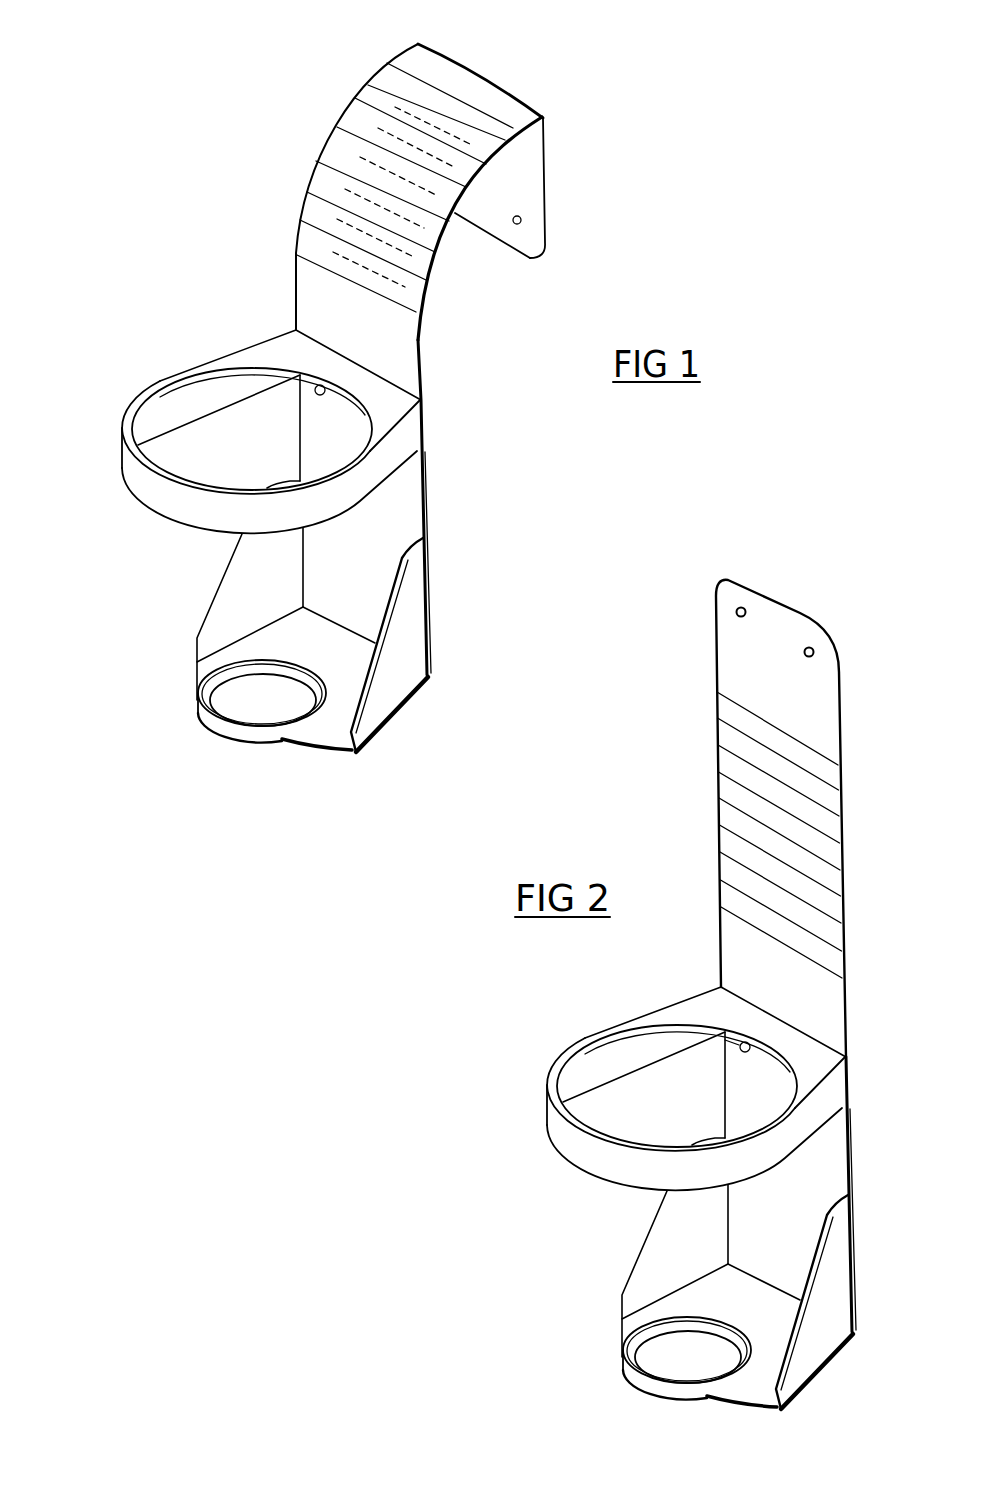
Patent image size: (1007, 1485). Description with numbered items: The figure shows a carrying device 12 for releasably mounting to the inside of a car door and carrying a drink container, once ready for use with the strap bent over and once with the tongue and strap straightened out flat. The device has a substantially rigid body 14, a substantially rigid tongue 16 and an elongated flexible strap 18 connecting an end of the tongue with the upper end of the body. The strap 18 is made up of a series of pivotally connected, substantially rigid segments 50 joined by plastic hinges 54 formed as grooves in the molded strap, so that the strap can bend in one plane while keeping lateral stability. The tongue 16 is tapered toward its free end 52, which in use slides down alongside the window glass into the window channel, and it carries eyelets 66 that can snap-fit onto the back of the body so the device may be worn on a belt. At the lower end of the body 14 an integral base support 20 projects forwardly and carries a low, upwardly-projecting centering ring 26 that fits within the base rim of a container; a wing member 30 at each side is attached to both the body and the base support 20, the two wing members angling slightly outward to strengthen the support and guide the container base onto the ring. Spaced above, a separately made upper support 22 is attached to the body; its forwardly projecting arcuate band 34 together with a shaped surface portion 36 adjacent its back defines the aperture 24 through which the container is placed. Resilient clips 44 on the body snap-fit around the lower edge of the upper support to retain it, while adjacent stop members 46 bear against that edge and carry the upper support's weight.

The carrying device 12 is at (200, 205).
The body 14 is at (425, 518).
The tongue 16 is at (548, 157).
The strap 18 is at (332, 137).
The base support 20 is at (195, 680).
The upper support 22 is at (168, 367).
The aperture 24 is at (222, 447).
The ring 26 is at (222, 727).
The wing member 30 is at (207, 598).
The band 34 is at (165, 500).
The shaped surface portion 36 is at (397, 405).
The resilient clip 44 is at (308, 376).
The stop member 46 is at (314, 386).
The segments 50 is at (397, 80).
The free end 52 is at (500, 243).
The plastic hinges 54 is at (437, 250).
The eyelets 66 is at (522, 216).